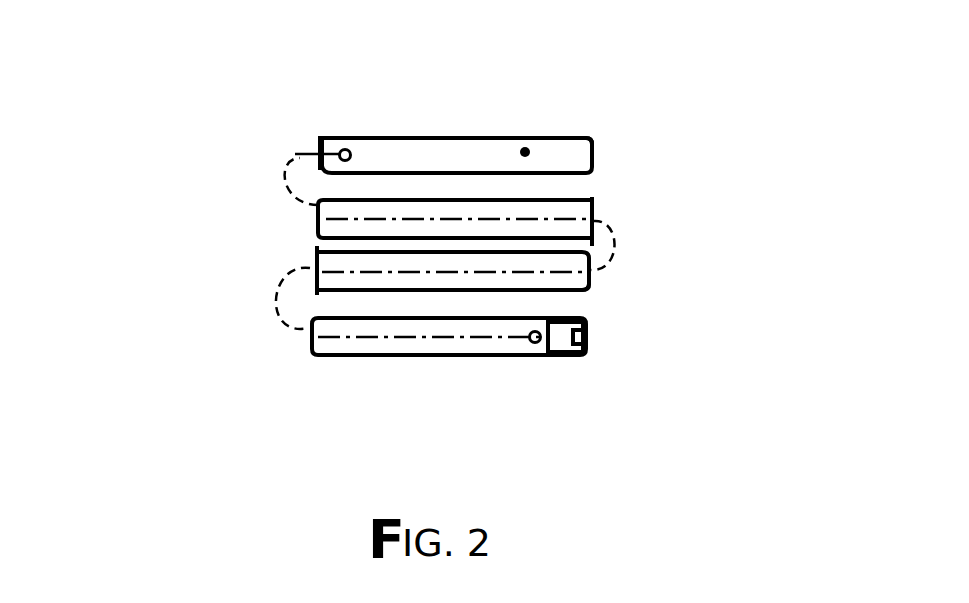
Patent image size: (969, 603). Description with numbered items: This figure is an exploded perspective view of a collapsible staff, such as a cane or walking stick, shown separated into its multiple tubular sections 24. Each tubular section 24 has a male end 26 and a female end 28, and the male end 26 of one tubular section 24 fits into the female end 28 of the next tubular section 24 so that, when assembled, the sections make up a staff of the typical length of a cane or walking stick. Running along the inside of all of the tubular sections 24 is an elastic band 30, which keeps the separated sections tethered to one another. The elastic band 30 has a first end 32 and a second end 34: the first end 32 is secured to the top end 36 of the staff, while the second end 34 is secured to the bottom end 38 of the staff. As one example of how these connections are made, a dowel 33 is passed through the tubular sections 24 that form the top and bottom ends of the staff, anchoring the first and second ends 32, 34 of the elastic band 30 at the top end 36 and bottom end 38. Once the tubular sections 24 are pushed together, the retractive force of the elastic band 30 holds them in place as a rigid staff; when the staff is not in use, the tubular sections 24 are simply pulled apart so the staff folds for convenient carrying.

The tubular section 24 is at (533, 136).
The male end 26 is at (598, 135).
The female end 28 is at (317, 137).
The elastic band 30 is at (619, 243).
The first end 32 is at (498, 358).
The dowel 33 is at (353, 135).
The second end 34 is at (319, 135).
The top end 36 is at (555, 361).
The bottom end 38 is at (443, 135).